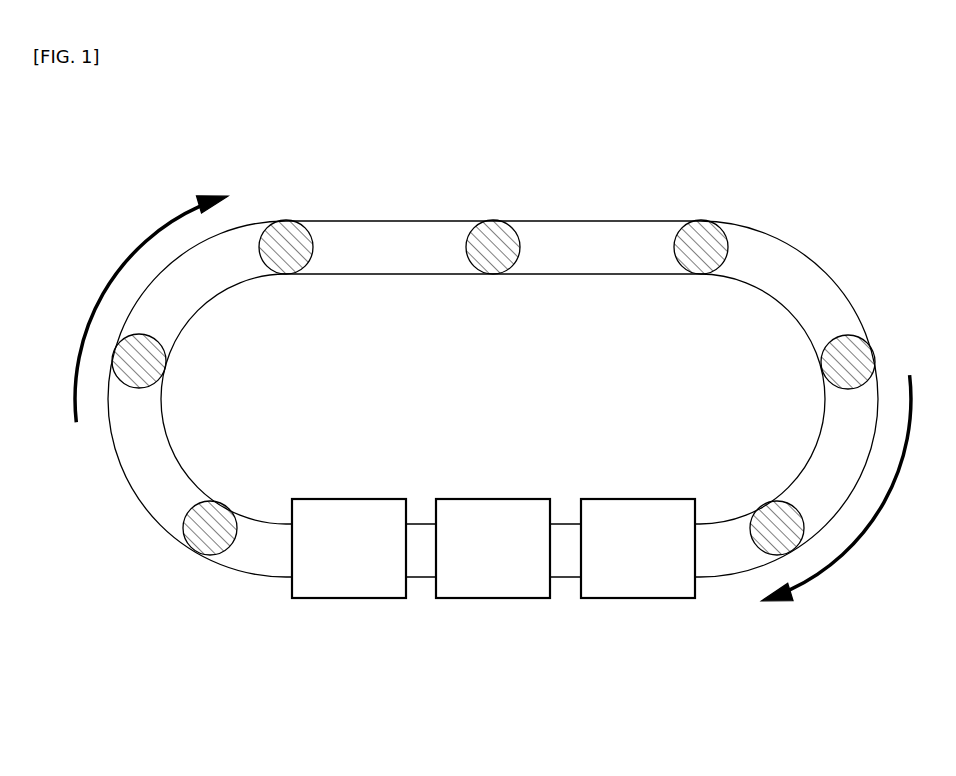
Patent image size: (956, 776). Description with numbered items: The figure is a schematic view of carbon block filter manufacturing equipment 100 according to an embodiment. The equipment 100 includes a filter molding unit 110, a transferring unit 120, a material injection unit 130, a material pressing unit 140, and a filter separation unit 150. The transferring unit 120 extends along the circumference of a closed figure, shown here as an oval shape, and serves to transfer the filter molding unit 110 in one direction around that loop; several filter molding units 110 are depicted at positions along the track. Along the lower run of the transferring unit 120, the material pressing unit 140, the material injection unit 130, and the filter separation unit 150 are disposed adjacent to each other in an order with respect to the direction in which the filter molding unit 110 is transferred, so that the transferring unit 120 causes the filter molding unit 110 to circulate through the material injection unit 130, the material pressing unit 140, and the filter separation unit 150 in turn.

The carbon block filter manufacturing equipment 100 is at (79, 143).
The filter molding unit 110 is at (192, 548).
The transferring unit 120 is at (811, 257).
The material injection unit 130 is at (490, 600).
The material pressing unit 140 is at (348, 600).
The filter separation unit 150 is at (635, 600).